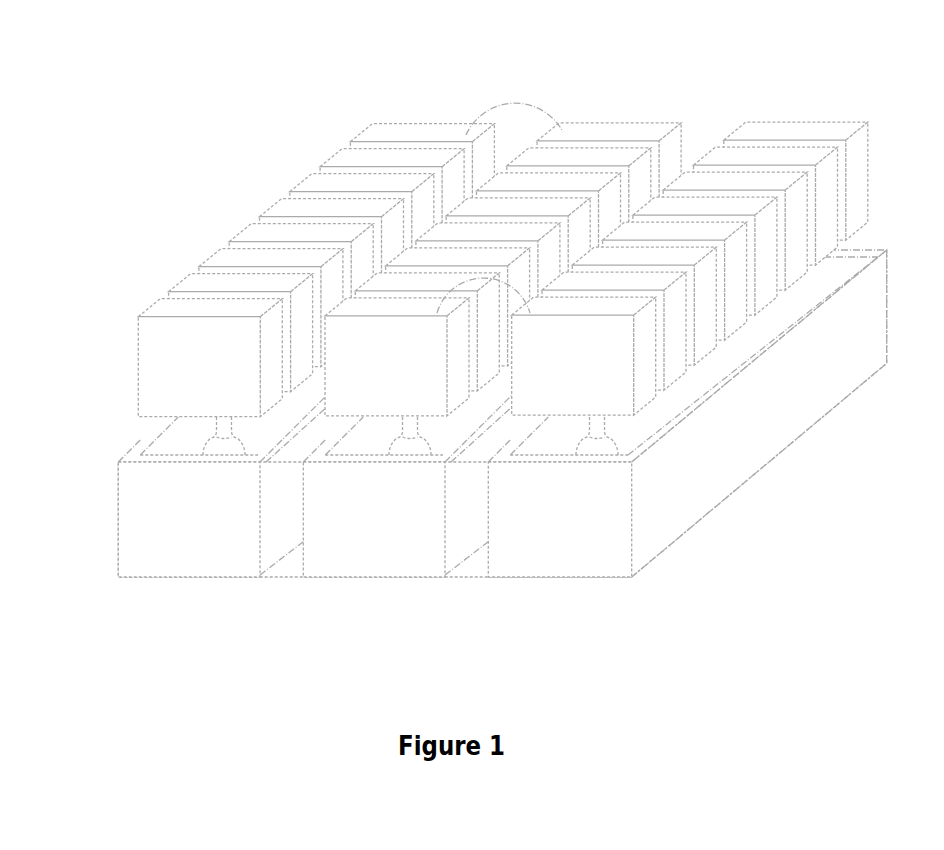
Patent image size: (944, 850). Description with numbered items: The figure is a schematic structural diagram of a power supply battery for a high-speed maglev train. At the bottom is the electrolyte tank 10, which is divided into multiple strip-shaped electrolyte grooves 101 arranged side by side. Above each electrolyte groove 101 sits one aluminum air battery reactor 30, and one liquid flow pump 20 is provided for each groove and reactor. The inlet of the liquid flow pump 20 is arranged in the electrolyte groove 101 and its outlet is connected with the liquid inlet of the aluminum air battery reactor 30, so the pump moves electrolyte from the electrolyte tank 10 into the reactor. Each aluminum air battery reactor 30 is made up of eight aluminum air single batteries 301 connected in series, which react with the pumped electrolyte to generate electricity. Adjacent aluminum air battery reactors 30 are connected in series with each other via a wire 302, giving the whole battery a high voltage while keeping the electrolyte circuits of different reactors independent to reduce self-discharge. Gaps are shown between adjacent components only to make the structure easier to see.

The electrolyte tank 10 is at (502, 481).
The electrolyte groove 101 is at (188, 552).
The liquid flow pump 20 is at (222, 448).
The aluminum air battery reactor 30 is at (452, 222).
The aluminum air single battery 301 is at (225, 262).
The wire 302 is at (537, 100).